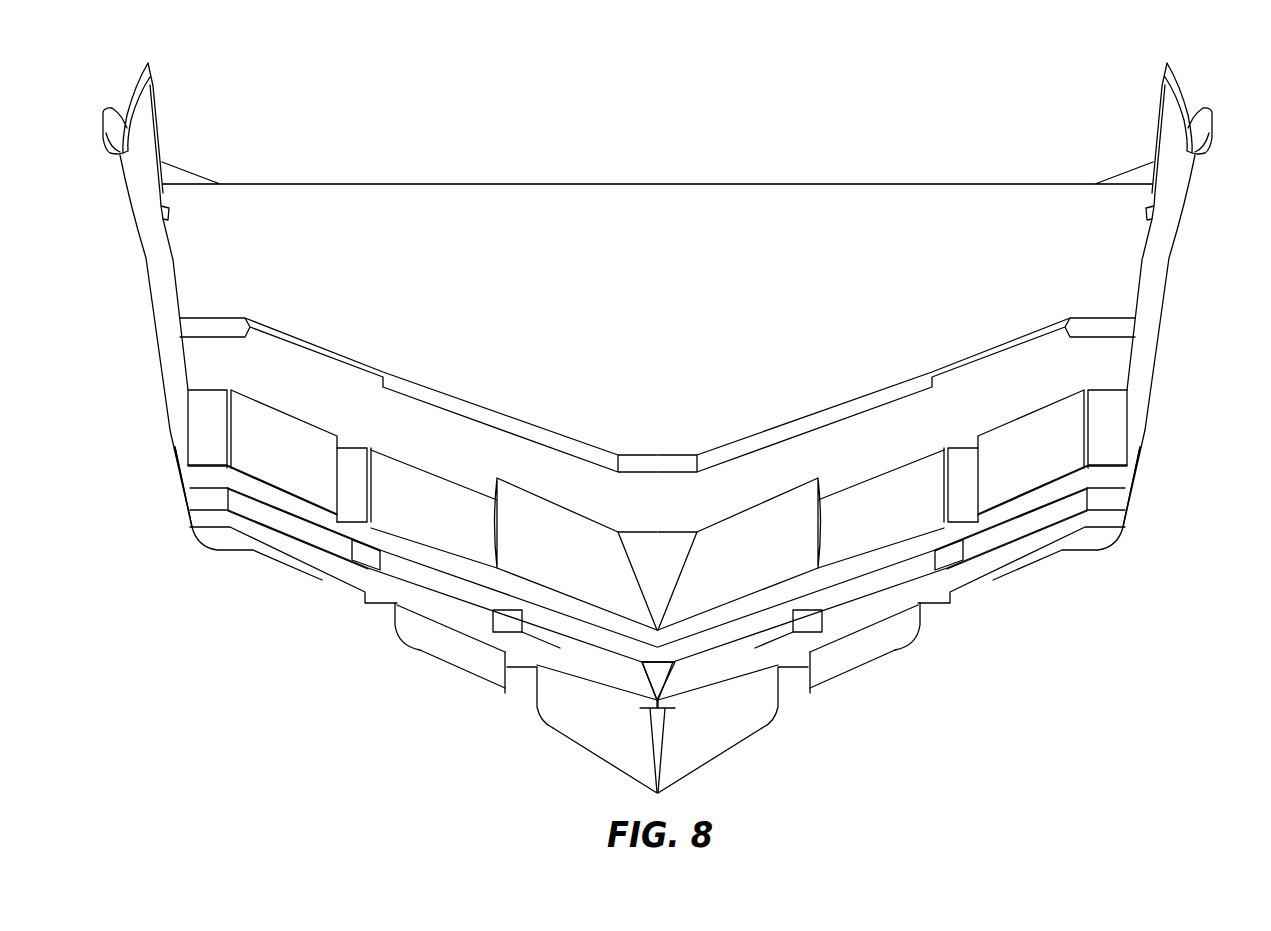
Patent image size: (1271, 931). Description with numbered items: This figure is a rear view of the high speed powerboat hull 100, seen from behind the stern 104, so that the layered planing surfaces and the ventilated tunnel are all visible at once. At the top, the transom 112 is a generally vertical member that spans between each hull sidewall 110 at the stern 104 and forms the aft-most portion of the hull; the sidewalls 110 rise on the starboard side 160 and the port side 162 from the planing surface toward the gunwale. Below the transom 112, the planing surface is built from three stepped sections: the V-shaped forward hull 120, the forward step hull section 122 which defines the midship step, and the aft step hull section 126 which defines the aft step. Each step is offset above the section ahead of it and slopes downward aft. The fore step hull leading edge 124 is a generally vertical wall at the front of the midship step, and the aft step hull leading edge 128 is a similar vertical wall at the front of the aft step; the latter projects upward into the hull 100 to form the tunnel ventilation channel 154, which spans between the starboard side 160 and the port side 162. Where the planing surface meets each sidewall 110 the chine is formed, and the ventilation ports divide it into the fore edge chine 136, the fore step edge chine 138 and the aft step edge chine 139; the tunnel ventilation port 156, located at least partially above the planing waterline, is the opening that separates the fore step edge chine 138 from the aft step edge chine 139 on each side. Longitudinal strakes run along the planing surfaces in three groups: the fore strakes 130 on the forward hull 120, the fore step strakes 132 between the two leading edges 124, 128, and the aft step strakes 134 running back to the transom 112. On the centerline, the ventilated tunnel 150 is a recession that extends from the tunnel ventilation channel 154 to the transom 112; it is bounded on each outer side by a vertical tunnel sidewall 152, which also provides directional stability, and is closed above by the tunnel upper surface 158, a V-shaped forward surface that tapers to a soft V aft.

The powerboat hull 100 is at (1112, 736).
The stern 104 is at (922, 156).
The hull sidewall 110 is at (157, 258).
The transom 112 is at (935, 400).
The forward hull 120 is at (330, 592).
The forward step hull section 122 is at (303, 540).
The fore step hull leading edge 124 is at (635, 690).
The aft step hull section 126 is at (283, 460).
The aft step hull leading edge 128 is at (760, 607).
The fore strakes 130 is at (395, 635).
The fore step strakes 132 is at (380, 575).
The aft step strakes 134 is at (355, 477).
The fore edge chine 136 is at (215, 552).
The fore step edge chine 138 is at (200, 500).
The aft step edge chine 139 is at (218, 417).
The ventilated tunnel 150 is at (662, 794).
The tunnel sidewall 152 is at (498, 545).
The tunnel ventilation channel 154 is at (565, 600).
The tunnel ventilation port 156 is at (195, 448).
The tunnel upper surface 158 is at (740, 525).
The starboard side 160 is at (1146, 114).
The port side 162 is at (185, 116).